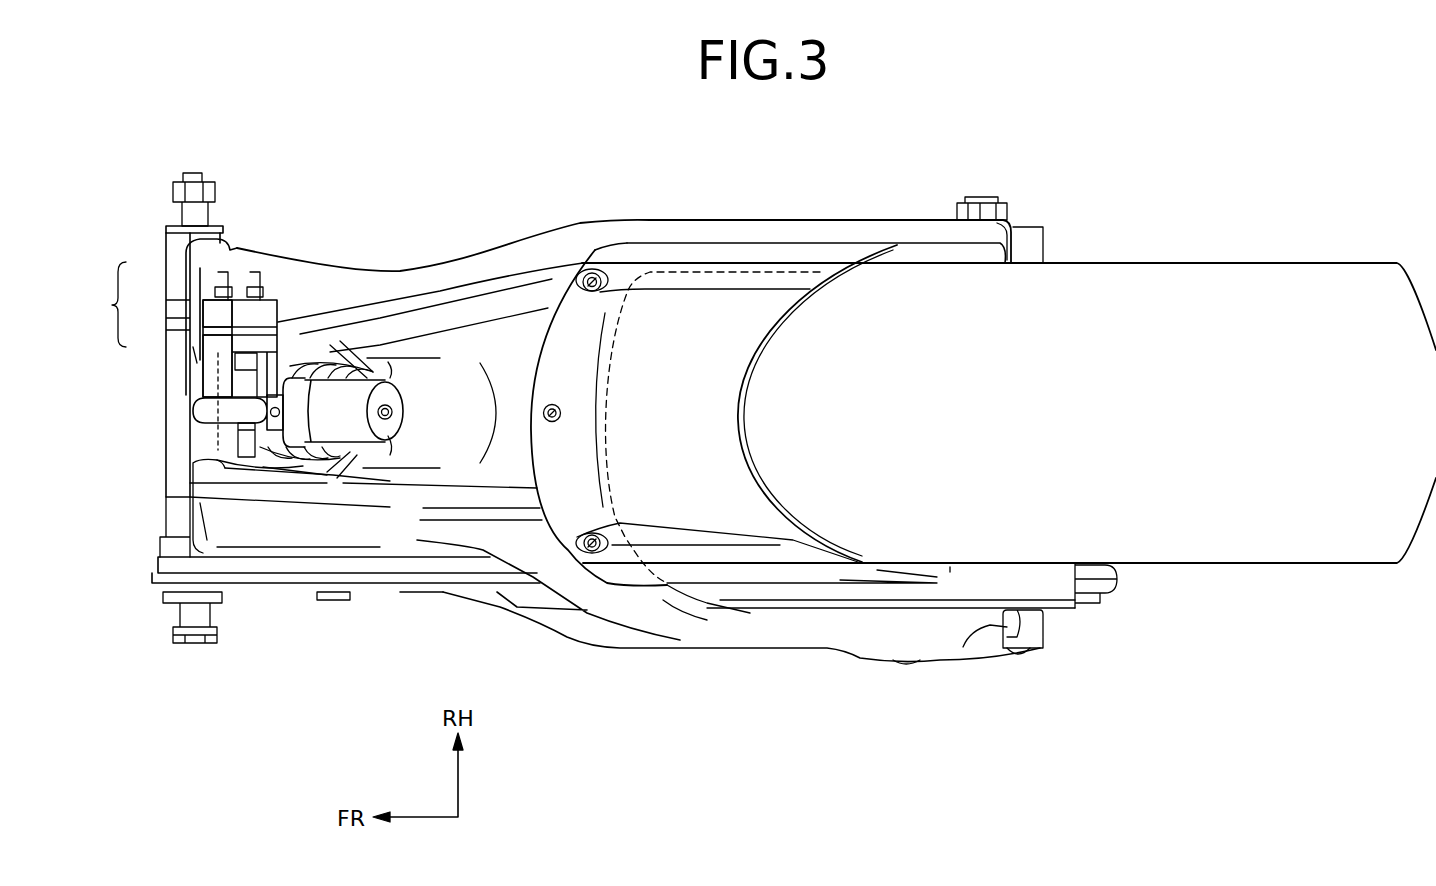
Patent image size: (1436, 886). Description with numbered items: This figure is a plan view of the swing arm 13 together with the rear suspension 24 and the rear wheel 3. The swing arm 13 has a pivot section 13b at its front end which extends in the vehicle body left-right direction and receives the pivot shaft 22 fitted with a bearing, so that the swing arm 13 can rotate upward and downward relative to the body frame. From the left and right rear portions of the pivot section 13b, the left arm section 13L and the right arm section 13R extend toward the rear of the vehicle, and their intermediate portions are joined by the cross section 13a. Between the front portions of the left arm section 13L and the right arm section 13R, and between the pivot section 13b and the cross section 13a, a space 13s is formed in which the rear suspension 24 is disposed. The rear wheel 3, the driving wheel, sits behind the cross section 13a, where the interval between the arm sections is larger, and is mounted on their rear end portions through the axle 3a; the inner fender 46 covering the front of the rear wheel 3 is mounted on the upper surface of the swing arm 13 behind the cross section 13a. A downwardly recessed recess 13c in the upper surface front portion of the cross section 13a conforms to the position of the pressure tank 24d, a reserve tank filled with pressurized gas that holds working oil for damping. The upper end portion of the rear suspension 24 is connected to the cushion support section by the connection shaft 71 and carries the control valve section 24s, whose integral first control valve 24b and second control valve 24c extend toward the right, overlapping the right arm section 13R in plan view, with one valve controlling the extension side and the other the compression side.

The rear wheel 3 is at (1314, 415).
The axle 3a is at (977, 193).
The swing arm 13 is at (378, 210).
The cross section 13a is at (527, 337).
The pivot section 13b is at (182, 397).
The recess 13c is at (477, 422).
The left arm section 13L is at (292, 527).
The right arm section 13R is at (262, 262).
The space 13s is at (303, 466).
The pivot shaft 22 is at (195, 647).
The rear suspension 24 is at (297, 303).
The first control valve 24b is at (187, 340).
The second control valve 24c is at (227, 312).
The pressure tank 24d is at (343, 415).
The control valve section 24s is at (152, 329).
The inner fender 46 is at (685, 415).
The connection shaft 71 is at (213, 387).